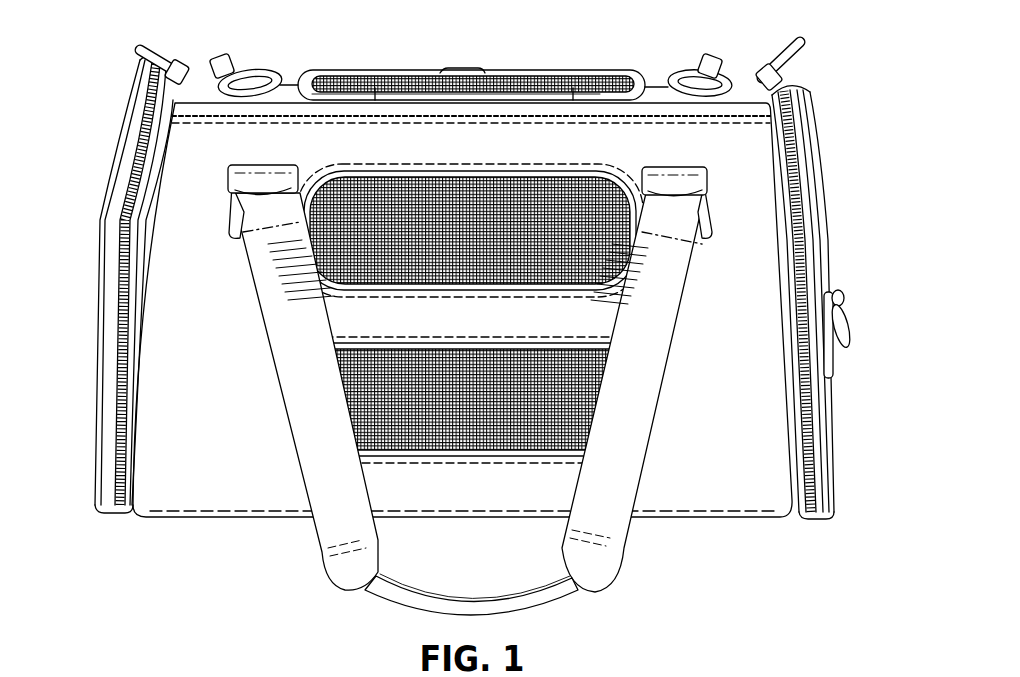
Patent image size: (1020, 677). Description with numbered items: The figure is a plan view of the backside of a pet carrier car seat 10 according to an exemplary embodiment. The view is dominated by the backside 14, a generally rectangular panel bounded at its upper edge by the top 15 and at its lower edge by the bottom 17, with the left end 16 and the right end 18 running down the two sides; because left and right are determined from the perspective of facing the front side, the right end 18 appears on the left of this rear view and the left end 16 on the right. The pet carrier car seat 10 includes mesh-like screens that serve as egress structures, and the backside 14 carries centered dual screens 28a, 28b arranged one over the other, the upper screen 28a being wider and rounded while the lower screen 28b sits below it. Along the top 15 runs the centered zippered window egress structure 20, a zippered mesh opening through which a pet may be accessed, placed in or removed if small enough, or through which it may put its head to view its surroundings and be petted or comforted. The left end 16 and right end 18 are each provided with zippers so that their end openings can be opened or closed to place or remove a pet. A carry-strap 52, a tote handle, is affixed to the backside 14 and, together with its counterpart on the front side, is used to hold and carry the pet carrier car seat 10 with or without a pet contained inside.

The pet carrier car seat 10 is at (892, 147).
The backside 14 is at (236, 364).
The top 15 is at (653, 85).
The left end 16 is at (834, 280).
The bottom 17 is at (186, 520).
The right end 18 is at (114, 276).
The zippered window egress structure 20 is at (481, 72).
The upper dual screen 28a is at (498, 172).
The lower dual screen 28b is at (505, 461).
The carry-strap 52 is at (616, 569).